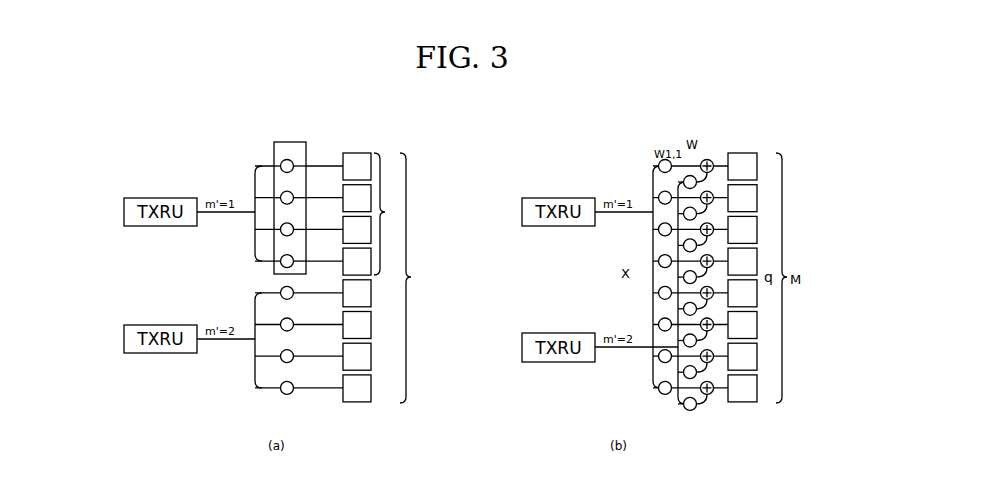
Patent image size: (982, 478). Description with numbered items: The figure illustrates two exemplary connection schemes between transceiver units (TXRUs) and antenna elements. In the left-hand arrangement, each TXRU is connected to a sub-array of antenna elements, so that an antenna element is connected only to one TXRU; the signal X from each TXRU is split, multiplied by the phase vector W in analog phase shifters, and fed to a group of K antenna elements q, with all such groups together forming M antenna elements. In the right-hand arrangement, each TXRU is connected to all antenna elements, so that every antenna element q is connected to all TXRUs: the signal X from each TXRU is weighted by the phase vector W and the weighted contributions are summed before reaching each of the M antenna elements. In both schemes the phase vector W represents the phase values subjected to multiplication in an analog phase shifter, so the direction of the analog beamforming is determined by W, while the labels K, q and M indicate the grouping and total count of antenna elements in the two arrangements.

The phase vector W is at (280, 206).
The input signal X is at (217, 273).
The number of antenna elements per group K is at (385, 214).
The antenna element q is at (393, 276).
The total number of antenna elements M is at (412, 278).